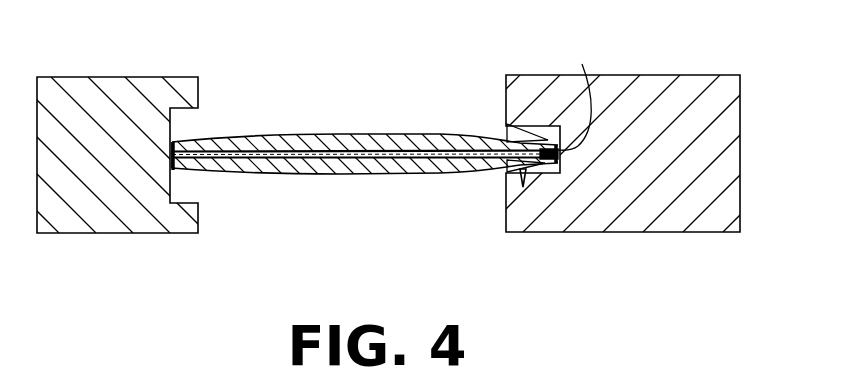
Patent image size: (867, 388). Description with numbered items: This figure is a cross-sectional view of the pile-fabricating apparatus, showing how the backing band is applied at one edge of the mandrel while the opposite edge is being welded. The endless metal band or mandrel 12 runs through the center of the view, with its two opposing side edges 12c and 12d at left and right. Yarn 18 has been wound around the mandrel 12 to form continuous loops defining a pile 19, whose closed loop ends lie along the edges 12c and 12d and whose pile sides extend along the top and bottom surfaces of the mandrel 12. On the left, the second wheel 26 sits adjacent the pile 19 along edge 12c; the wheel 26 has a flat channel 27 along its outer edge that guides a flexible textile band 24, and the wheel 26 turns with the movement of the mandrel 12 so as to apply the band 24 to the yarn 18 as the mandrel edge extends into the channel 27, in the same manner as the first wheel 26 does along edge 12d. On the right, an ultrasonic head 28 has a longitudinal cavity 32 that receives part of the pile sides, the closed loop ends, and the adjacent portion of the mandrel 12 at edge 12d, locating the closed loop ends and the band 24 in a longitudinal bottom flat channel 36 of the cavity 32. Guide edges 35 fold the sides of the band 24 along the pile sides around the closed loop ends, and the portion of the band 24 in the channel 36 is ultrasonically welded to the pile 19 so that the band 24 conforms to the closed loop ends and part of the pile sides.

The mandrel 12 is at (364, 151).
The side edge of mandrel 12c is at (168, 159).
The side edge of mandrel 12d is at (556, 161).
The yarn 18 is at (307, 135).
The pile 19 is at (428, 139).
The flexible textile band 24 is at (178, 187).
The wheel 26 is at (112, 76).
The flat channel 27 is at (190, 127).
The ultrasonic head 28 is at (644, 75).
The longitudinal cavity 32 is at (522, 176).
The guide edges 35 is at (518, 128).
The bottom flat channel 36 is at (578, 94).